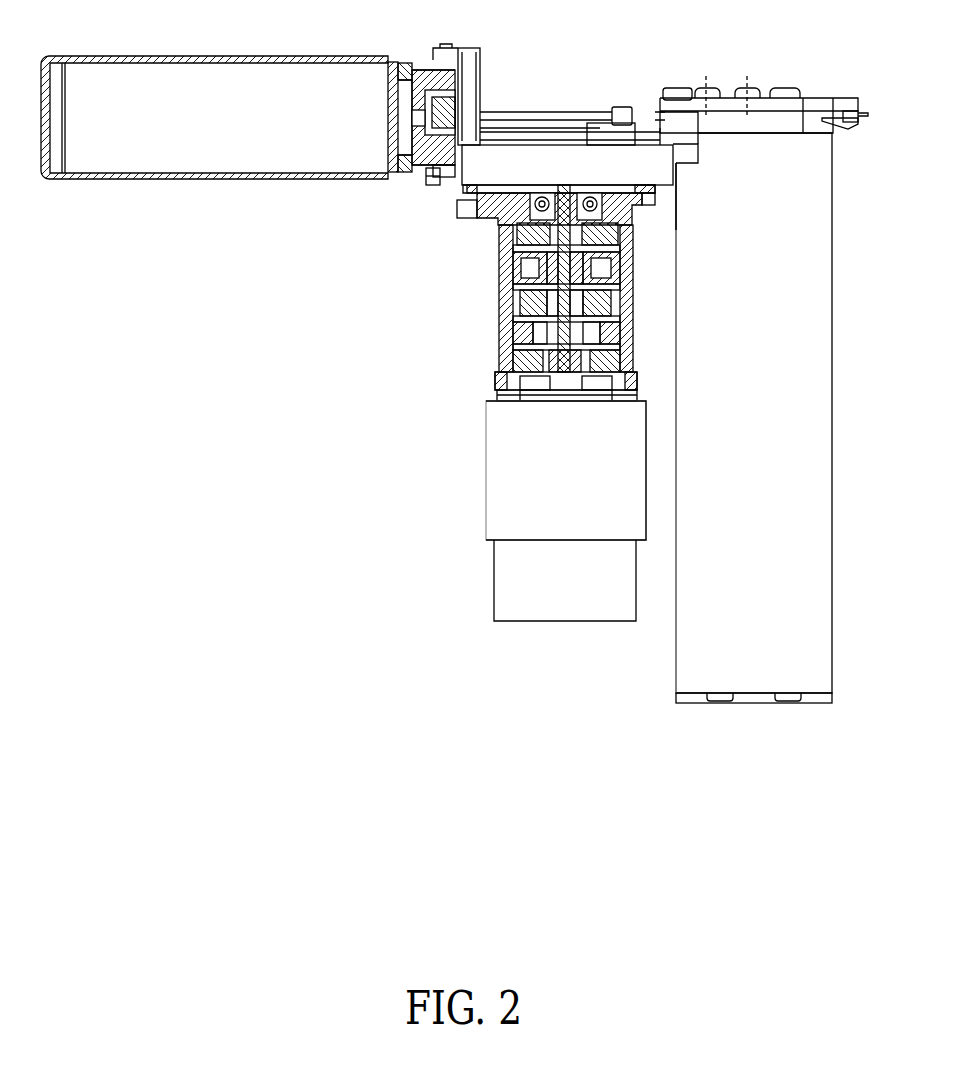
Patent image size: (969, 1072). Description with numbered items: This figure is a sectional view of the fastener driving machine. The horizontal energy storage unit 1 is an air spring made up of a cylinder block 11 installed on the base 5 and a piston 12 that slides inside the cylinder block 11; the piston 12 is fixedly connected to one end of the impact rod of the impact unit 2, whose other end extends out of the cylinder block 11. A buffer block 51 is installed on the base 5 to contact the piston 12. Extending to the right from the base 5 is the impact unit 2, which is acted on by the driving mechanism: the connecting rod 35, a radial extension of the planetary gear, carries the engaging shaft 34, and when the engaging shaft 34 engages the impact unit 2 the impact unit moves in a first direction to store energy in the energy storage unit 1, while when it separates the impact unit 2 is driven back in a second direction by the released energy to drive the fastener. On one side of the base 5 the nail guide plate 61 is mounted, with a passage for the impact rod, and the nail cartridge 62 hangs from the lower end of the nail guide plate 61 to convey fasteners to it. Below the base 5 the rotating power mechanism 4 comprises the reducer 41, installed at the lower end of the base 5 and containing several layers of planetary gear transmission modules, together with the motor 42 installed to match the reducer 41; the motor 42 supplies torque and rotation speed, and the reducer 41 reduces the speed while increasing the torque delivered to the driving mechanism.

The energy storage unit 1 is at (176, 180).
The cylinder block 11 is at (243, 178).
The piston 12 is at (405, 137).
The buffer block 51 is at (432, 180).
The base 5 is at (468, 190).
The impact unit 2 is at (540, 108).
The connecting rod 35 is at (600, 133).
The engaging shaft 34 is at (624, 113).
The nail guide plate 61 is at (818, 98).
The nail cartridge 62 is at (807, 252).
The rotating power mechanism 4 is at (532, 403).
The reducer 41 is at (498, 343).
The motor 42 is at (495, 437).